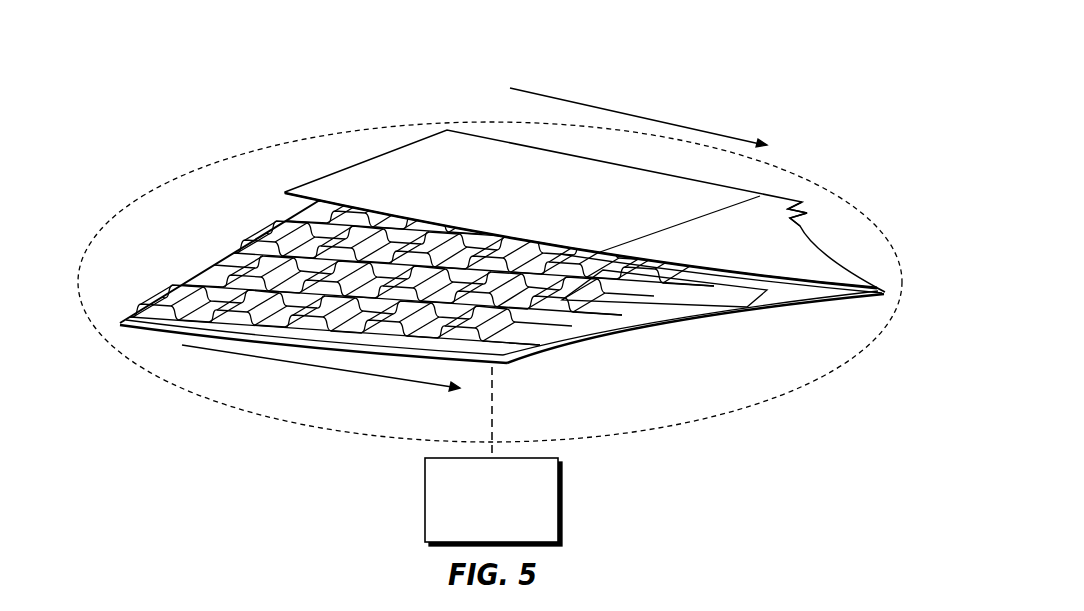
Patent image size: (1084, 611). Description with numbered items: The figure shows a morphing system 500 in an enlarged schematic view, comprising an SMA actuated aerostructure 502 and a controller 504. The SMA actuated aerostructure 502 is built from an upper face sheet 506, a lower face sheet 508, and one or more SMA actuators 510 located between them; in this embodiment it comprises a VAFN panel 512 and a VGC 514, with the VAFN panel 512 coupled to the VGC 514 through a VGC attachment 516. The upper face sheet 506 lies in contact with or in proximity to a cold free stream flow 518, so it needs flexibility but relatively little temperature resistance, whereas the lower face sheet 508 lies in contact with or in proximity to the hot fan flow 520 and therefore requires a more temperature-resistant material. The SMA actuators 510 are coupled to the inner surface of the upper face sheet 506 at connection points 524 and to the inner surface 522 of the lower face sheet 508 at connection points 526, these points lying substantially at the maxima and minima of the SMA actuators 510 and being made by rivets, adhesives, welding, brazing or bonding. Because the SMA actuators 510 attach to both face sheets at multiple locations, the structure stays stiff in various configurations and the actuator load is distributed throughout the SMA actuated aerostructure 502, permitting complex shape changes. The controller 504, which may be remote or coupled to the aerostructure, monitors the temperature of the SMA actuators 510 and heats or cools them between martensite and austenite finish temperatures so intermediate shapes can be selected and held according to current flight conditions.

The morphing system 500 is at (388, 45).
The SMA actuated aerostructure 502 is at (822, 186).
The controller 504 is at (423, 472).
The upper face sheet 506 is at (341, 170).
The lower face sheet 508 is at (580, 340).
The SMA actuators 510 is at (217, 295).
The VAFN panel 512 is at (532, 200).
The VGC 514 is at (767, 252).
The VGC attachment 516 is at (760, 207).
The cold free stream flow 518 is at (534, 93).
The hot fan flow 520 is at (205, 350).
The inner surface of the lower face sheet 522 is at (807, 292).
The connection points 524 is at (305, 262).
The connection points 526 is at (327, 237).